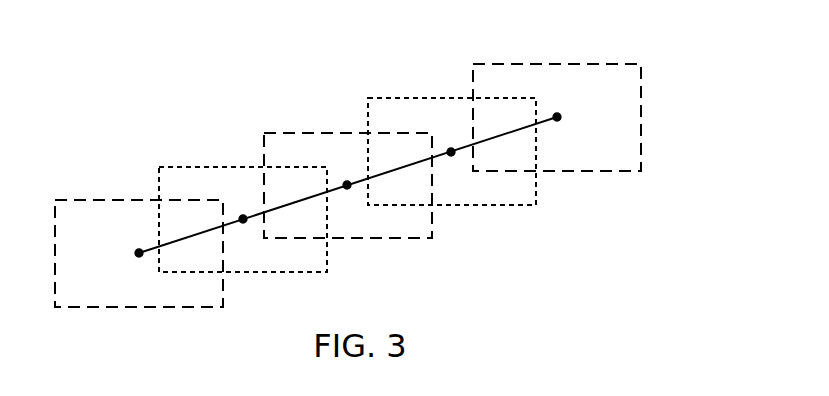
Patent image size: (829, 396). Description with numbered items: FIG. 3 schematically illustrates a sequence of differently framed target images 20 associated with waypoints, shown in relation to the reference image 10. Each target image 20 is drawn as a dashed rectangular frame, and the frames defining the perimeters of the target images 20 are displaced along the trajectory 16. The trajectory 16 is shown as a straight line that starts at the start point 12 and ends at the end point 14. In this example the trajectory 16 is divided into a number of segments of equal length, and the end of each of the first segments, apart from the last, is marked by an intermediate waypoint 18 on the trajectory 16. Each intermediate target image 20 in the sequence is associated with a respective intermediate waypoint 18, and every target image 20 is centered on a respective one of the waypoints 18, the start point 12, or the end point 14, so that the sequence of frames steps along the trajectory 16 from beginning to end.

The reference image 10 is at (678, 112).
The start point 12 is at (139, 253).
The end point 14 is at (557, 117).
The trajectory 16 is at (243, 218).
The intermediate waypoint 18 is at (243, 219).
The target image 20 is at (72, 200).